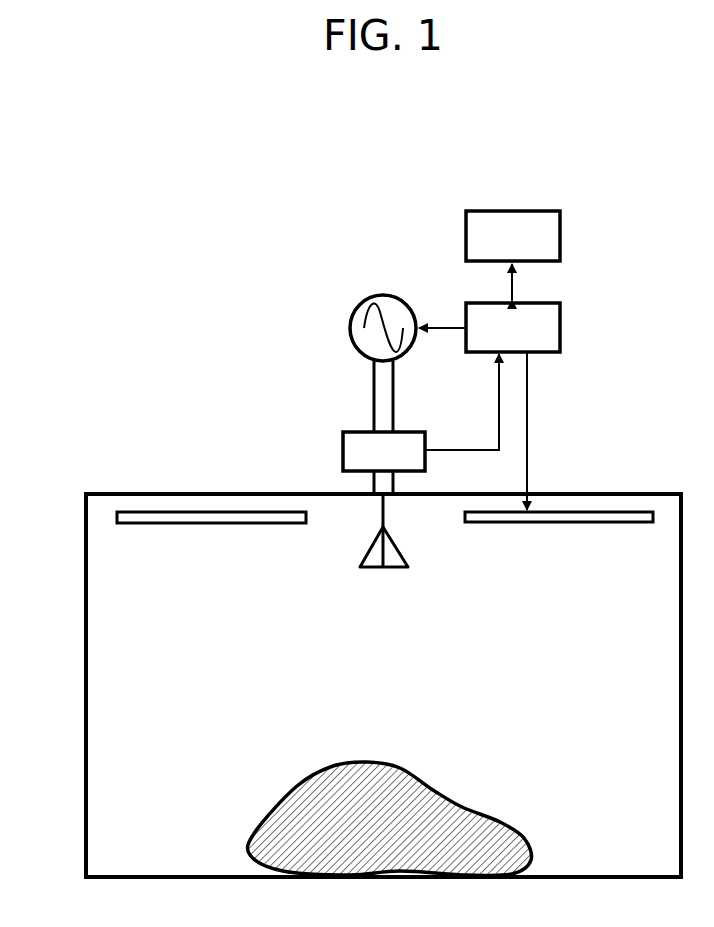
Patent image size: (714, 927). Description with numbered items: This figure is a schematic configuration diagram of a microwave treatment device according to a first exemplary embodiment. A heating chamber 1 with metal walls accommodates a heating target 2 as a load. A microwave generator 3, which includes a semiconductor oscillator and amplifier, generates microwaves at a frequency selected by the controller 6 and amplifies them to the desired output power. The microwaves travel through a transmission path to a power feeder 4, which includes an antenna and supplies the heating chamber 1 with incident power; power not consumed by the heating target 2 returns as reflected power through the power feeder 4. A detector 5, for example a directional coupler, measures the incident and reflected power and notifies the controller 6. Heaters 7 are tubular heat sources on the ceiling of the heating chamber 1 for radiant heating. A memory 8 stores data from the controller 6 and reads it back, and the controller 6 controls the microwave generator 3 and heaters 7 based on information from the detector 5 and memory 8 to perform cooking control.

The heating chamber 1 is at (84, 527).
The heating target 2 is at (302, 812).
The microwave generator 3 is at (350, 327).
The power feeder 4 is at (372, 568).
The detector 5 is at (343, 450).
The controller 6 is at (560, 328).
The heater 7 is at (211, 523).
The memory 8 is at (560, 237).